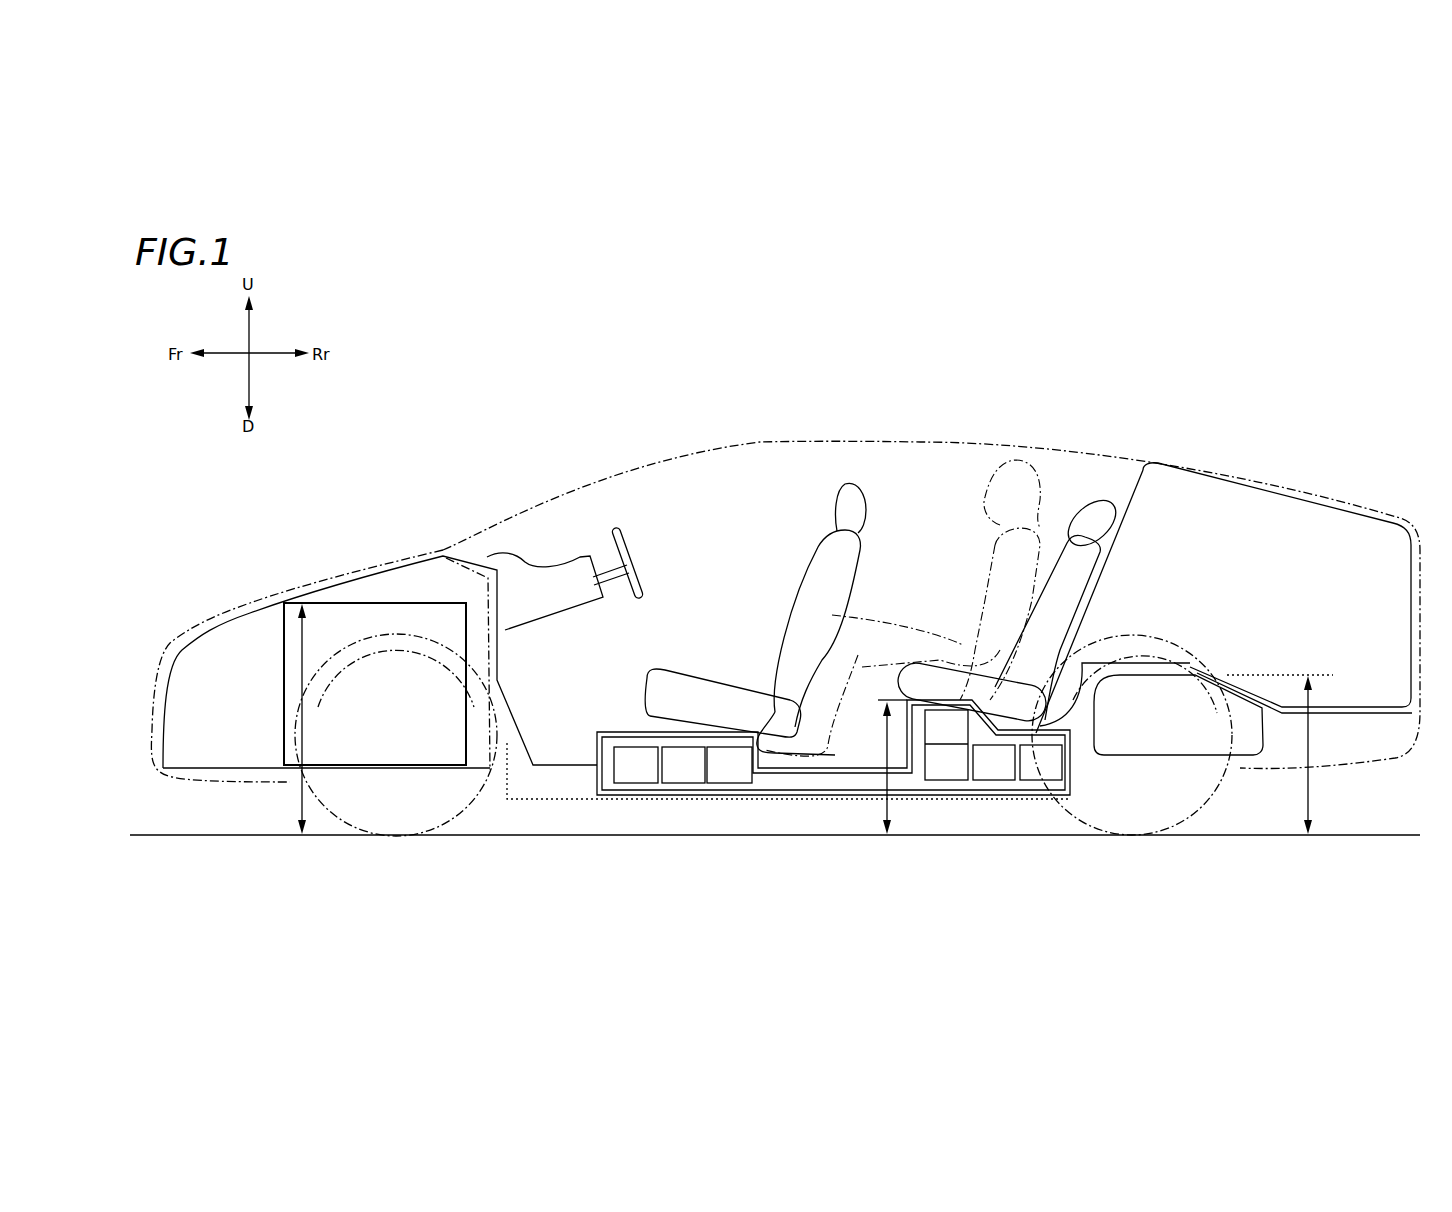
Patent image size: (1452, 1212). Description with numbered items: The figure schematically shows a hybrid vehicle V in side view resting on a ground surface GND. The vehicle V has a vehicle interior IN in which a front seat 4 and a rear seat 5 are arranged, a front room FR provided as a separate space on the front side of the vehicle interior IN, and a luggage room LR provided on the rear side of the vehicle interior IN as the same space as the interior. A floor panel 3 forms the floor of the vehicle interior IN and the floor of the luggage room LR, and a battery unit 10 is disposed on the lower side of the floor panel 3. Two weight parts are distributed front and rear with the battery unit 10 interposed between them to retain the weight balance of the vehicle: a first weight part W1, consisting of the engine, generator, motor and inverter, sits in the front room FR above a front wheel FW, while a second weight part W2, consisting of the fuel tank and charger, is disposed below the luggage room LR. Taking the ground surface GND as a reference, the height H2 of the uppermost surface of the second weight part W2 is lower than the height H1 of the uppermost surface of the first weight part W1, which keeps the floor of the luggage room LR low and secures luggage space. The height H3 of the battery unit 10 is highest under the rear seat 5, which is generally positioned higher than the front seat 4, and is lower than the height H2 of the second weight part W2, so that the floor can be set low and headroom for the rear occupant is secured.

The vehicle V is at (1099, 432).
The vehicle interior IN is at (945, 562).
The front room FR is at (420, 563).
The luggage room LR is at (1290, 490).
The first weight part W1 is at (287, 658).
The second weight part W2 is at (1147, 757).
The front wheel FW is at (338, 815).
The ground surface GND is at (1398, 838).
The floor panel 3 is at (615, 732).
The front seat 4 is at (710, 673).
The rear seat 5 is at (1083, 620).
The battery unit 10 is at (597, 772).
The height of the first weight part H1 is at (302, 796).
The height of the second weight part H2 is at (1308, 797).
The height of the battery unit H3 is at (878, 767).